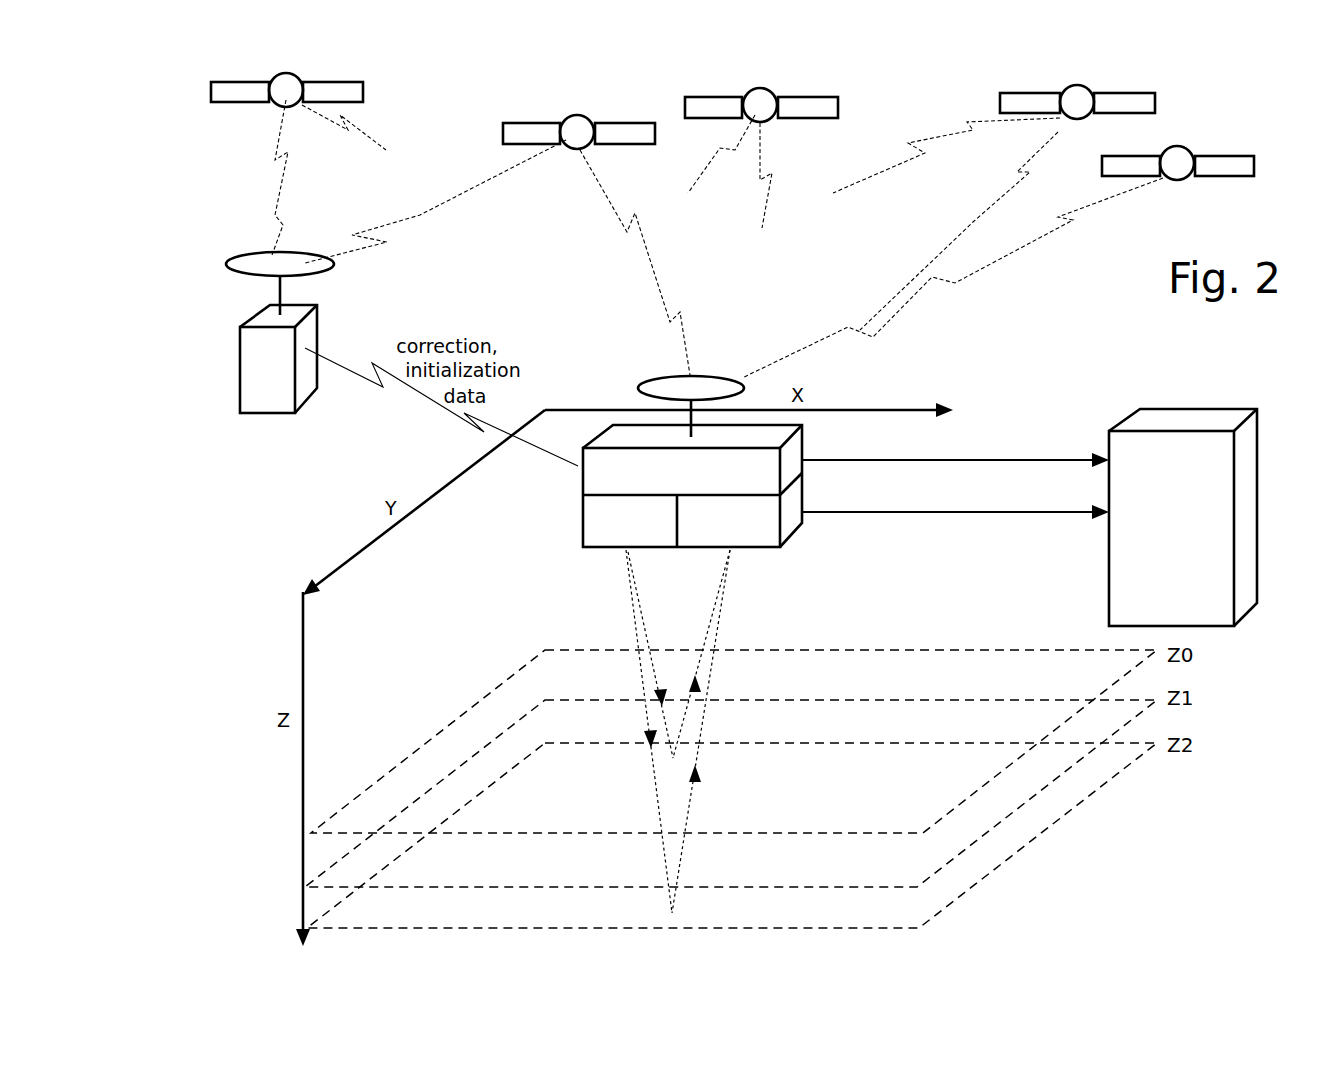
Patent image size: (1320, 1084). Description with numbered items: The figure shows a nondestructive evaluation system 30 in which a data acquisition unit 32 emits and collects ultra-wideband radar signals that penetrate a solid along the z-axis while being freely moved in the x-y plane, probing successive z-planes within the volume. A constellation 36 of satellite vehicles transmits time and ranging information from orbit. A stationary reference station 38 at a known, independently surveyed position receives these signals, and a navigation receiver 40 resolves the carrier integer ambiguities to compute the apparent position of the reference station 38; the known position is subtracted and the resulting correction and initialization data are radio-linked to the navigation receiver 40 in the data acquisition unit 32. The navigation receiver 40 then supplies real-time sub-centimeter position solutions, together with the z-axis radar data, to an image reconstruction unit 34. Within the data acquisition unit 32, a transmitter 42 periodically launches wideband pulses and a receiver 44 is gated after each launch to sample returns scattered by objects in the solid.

The nondestructive evaluation (NDE) system 30 is at (263, 308).
The data acquisition unit 32 is at (721, 461).
The image reconstruction unit 34 is at (1257, 422).
The constellation of satellite vehicles 36 is at (1262, 118).
The stationary reference station 38 is at (240, 378).
The navigation receiver 40 is at (679, 467).
The transmitter 42 is at (630, 523).
The receiver 44 is at (732, 523).